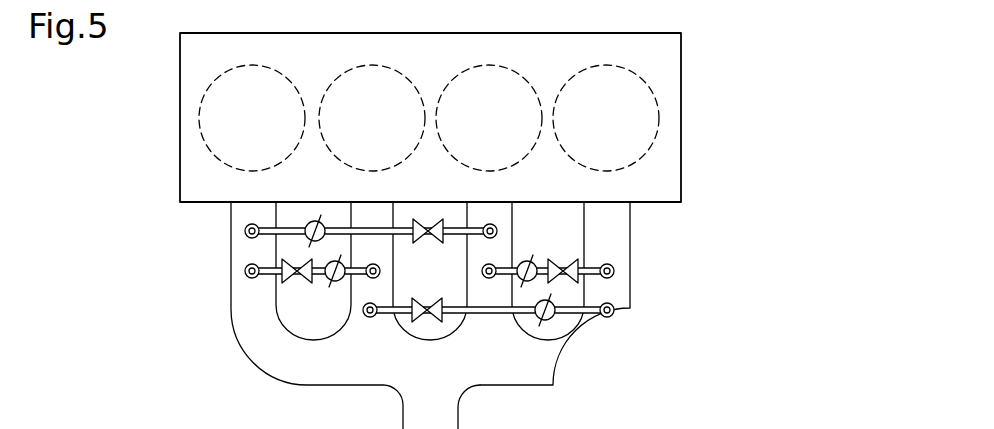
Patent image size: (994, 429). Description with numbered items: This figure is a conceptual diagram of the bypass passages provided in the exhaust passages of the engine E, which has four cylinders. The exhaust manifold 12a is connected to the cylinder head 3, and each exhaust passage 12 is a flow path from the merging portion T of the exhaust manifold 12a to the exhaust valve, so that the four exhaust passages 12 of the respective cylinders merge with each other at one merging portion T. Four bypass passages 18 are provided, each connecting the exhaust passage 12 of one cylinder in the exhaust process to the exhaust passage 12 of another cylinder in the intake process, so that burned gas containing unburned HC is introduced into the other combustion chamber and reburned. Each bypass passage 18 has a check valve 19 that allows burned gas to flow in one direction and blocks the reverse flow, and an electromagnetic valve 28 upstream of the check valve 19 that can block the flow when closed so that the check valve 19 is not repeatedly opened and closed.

The cylinder head 3 is at (180, 123).
The engine E is at (454, 120).
The exhaust passage 12 is at (446, 315).
The exhaust manifold 12a is at (623, 337).
The merging portion T is at (389, 396).
The bypass passage 18 is at (282, 269).
The check valve 19 is at (312, 222).
The electromagnetic valve 28 is at (428, 218).